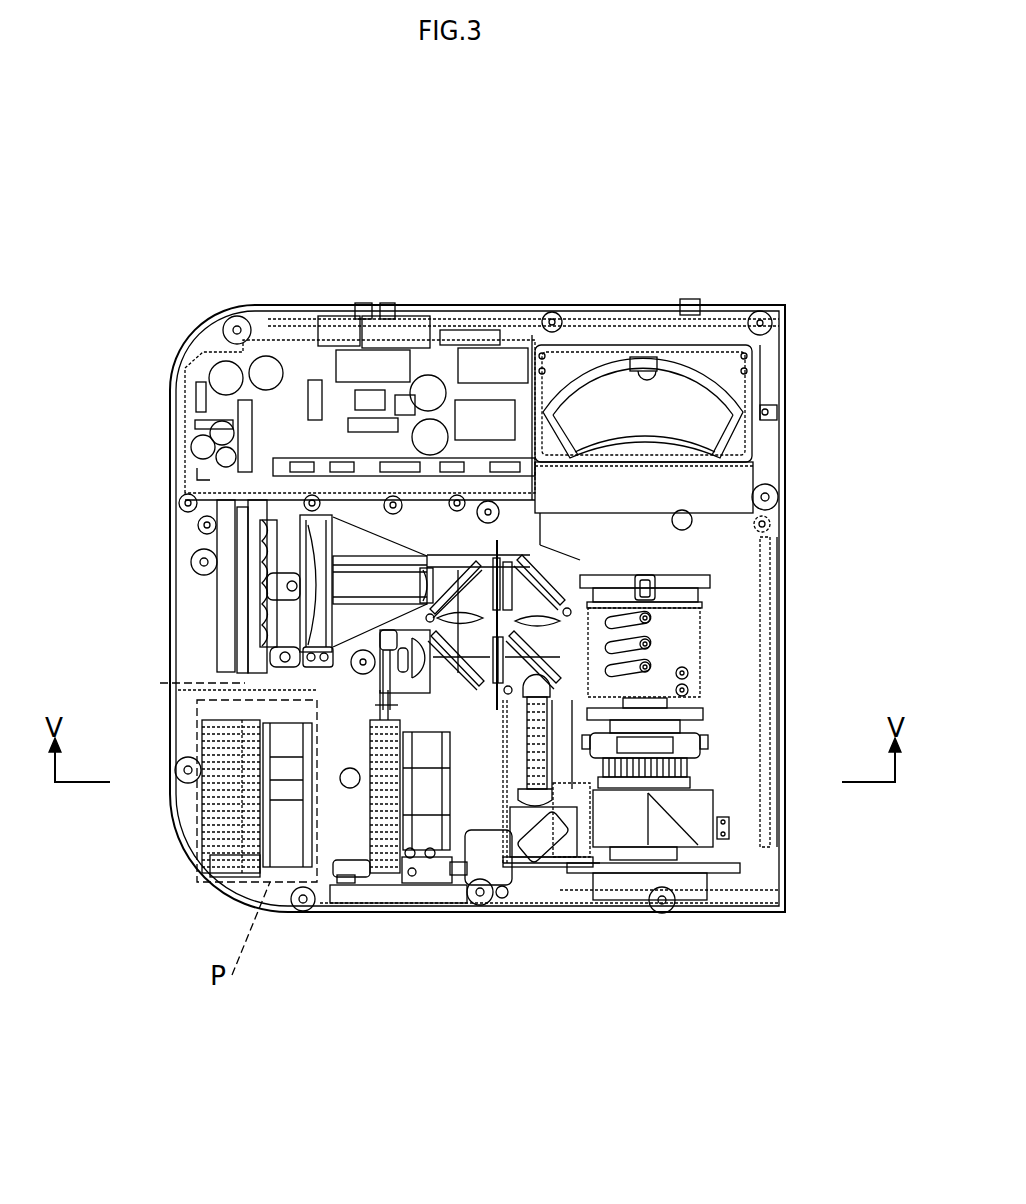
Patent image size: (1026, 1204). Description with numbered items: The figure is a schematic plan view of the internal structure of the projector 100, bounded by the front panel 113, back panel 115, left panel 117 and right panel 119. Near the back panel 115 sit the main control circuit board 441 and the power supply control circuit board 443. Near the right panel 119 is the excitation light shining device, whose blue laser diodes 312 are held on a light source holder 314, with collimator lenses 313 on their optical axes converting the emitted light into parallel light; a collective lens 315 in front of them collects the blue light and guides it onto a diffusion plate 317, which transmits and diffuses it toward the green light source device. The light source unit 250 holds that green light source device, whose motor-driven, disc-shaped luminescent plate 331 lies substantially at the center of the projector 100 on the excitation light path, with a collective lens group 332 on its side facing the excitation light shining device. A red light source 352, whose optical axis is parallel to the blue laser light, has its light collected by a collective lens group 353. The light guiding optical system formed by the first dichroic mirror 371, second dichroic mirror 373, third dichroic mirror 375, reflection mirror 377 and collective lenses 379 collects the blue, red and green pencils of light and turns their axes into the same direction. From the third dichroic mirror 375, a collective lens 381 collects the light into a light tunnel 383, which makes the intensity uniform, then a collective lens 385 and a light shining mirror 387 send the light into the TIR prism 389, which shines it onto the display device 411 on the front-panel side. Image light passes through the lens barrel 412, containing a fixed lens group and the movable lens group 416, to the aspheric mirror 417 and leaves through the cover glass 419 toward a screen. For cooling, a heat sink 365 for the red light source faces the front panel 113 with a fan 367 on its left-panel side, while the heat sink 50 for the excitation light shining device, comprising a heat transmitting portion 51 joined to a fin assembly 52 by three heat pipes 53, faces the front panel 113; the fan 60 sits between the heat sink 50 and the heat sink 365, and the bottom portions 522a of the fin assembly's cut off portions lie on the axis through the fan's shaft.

The projector 100 is at (726, 213).
The front panel 113 is at (612, 895).
The back panel 115 is at (555, 500).
The left panel 117 is at (783, 598).
The right panel 119 is at (222, 500).
The light source unit 250 is at (390, 530).
The blue laser diodes 312 is at (252, 540).
The collimator lenses 313 is at (275, 575).
The light source holder 314 is at (237, 593).
The collective lens 315 is at (248, 515).
The diffusion plate 317 is at (418, 560).
The luminescent plate 331 is at (548, 615).
The collective lens group 332 is at (500, 585).
The red light source 352 is at (397, 667).
The collective lens group 353 is at (402, 663).
The heat sink 365 is at (458, 680).
The fan 367 is at (430, 833).
The first dichroic mirror 371 is at (462, 600).
The second dichroic mirror 373 is at (447, 660).
The third dichroic mirror 375 is at (538, 745).
The reflection mirror 377 is at (555, 605).
The collective lenses 379 is at (468, 983).
The collective lens 381 is at (645, 775).
The light tunnel 383 is at (655, 815).
The collective lens 385 is at (548, 842).
The light shining mirror 387 is at (530, 832).
The TIR prism 389 is at (623, 837).
The display device 411 is at (596, 792).
The lens barrel 412 is at (687, 632).
The movable lens group 416 is at (665, 647).
The aspheric mirror 417 is at (693, 413).
The cover glass 419 is at (707, 477).
The main control circuit board 441 is at (305, 452).
The power supply control circuit board 443 is at (295, 358).
The heat sink 50 is at (205, 669).
The heat transmitting portion 51 is at (222, 610).
The fin assembly 52 is at (205, 718).
The heat pipes 53 is at (213, 622).
The fan 60 is at (297, 723).
The bottom portions 522a is at (245, 775).